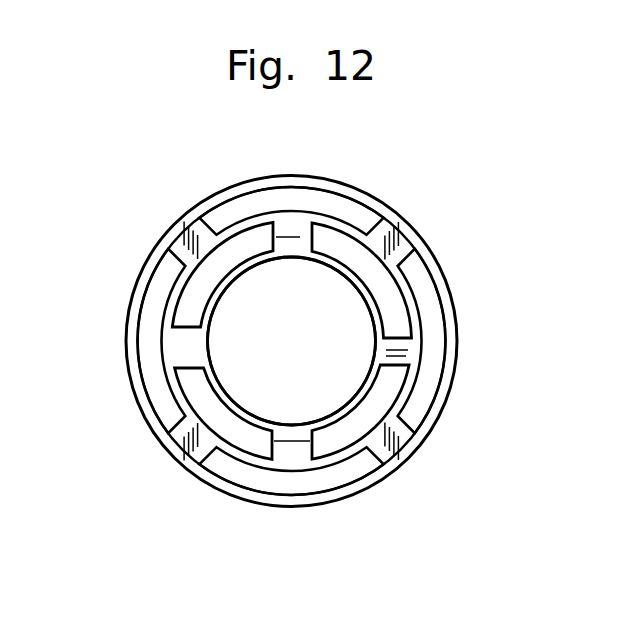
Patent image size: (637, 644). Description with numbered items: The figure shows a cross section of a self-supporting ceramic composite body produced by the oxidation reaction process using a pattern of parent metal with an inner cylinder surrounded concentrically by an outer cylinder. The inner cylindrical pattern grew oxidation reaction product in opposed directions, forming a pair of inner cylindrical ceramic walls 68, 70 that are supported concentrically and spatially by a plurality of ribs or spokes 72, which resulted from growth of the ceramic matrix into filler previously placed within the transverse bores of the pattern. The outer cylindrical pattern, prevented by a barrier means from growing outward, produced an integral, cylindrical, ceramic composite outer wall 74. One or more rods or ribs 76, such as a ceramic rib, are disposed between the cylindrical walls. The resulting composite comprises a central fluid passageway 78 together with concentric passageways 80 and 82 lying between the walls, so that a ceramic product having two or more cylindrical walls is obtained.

The inner cylindrical ceramic wall 68 is at (355, 288).
The inner cylindrical ceramic wall 70 is at (408, 299).
The ribs or spokes 72 is at (300, 217).
The ceramic composite outer wall 74 is at (299, 177).
The rods or ribs 76 is at (203, 242).
The central fluid passageway 78 is at (315, 387).
The concentric passageway 80 is at (368, 420).
The concentric passageway 82 is at (428, 395).